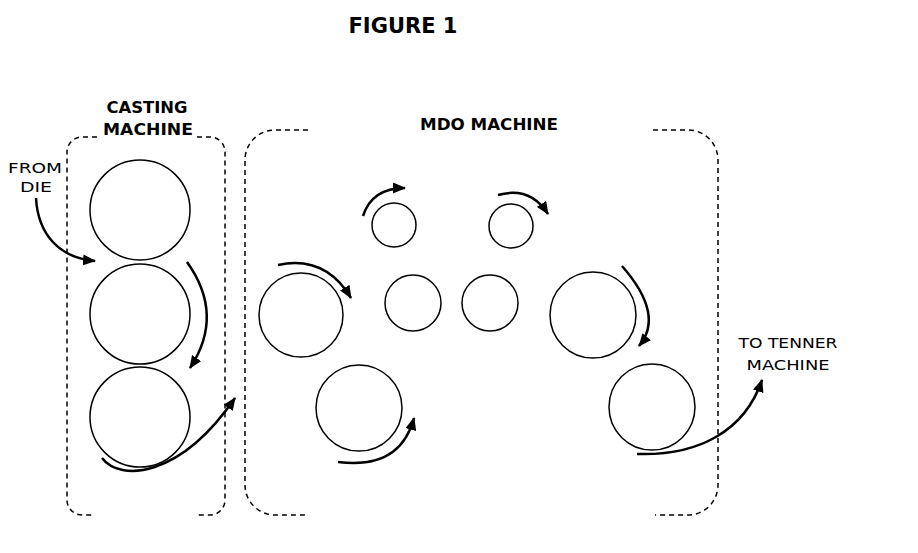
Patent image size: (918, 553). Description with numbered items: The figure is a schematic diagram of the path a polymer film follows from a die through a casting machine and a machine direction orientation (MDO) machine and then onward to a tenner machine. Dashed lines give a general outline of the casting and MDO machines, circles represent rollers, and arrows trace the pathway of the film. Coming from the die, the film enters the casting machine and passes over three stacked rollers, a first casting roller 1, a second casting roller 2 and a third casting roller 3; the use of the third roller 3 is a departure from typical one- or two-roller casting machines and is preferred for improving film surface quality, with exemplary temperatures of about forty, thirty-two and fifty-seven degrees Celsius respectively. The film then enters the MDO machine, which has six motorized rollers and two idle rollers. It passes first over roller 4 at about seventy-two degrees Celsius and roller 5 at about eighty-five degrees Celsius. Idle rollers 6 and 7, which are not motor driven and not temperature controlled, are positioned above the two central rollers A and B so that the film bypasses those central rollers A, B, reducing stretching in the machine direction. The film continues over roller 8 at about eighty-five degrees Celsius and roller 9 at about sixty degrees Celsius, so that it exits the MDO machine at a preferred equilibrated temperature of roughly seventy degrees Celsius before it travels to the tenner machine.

The first casting roller 1 is at (140, 210).
The second casting roller 2 is at (140, 314).
The third casting roller 3 is at (140, 417).
The MDO roller 4 is at (301, 315).
The MDO roller 5 is at (359, 408).
The idle roller 6 is at (394, 225).
The idle roller 7 is at (511, 226).
The central MDO roller A is at (413, 303).
The central MDO roller B is at (490, 303).
The MDO roller 8 is at (593, 315).
The MDO roller 9 is at (652, 407).